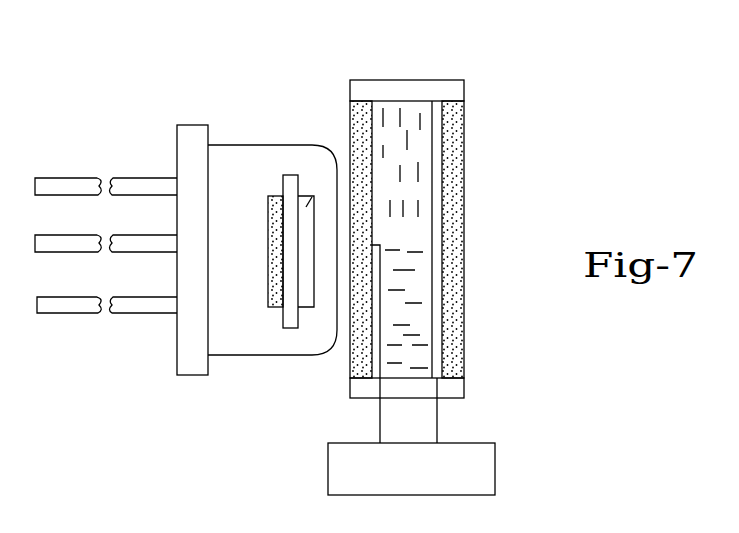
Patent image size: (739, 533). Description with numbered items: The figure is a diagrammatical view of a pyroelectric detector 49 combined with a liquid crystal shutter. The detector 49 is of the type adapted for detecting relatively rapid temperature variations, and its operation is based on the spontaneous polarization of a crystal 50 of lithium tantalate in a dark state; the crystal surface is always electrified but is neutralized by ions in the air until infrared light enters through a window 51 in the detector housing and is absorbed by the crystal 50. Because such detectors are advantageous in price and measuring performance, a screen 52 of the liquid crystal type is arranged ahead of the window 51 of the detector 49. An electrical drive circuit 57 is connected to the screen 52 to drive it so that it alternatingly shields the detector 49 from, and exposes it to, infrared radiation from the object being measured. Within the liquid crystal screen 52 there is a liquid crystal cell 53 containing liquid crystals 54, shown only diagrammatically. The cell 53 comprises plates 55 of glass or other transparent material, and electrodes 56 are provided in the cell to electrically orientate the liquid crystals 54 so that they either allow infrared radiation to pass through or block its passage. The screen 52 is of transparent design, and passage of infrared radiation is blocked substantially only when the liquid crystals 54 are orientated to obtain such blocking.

The pyroelectric detector 49 is at (188, 386).
The crystal 50 is at (314, 180).
The window 51 is at (337, 185).
The liquid crystal screen 52 is at (432, 72).
The liquid crystal cell 53 is at (405, 235).
The liquid crystals 54 is at (413, 303).
The plates 55 is at (362, 147).
The electrodes 56 is at (380, 323).
The electrical drive circuit 57 is at (476, 453).